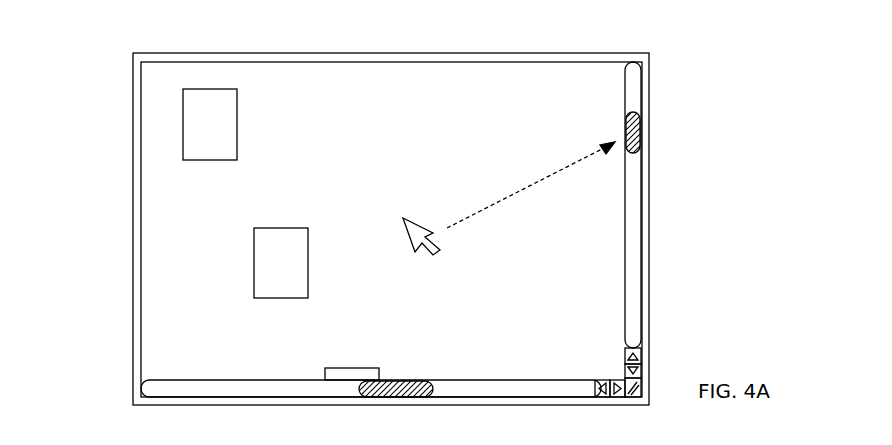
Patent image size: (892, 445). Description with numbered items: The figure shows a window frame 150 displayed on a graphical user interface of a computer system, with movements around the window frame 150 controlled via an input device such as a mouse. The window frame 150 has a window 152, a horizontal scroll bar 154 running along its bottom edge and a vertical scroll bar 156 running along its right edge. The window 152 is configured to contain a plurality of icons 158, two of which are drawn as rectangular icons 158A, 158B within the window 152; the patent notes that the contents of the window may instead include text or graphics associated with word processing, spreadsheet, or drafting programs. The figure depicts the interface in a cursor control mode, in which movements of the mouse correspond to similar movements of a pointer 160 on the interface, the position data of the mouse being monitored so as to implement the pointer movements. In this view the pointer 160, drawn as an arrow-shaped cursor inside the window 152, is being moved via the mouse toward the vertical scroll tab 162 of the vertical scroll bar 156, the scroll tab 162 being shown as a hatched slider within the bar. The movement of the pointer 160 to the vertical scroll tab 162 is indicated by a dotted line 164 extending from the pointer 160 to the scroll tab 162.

The window frame 150 is at (378, 53).
The window 152 is at (167, 247).
The horizontal scroll bar 154 is at (228, 395).
The vertical scroll bar 156 is at (642, 252).
The icons 158 is at (392, 406).
The icon 158A is at (223, 115).
The icon 158B is at (280, 237).
The pointer 160 is at (415, 222).
The vertical scroll tab 162 is at (642, 128).
The dotted line 164 is at (520, 192).